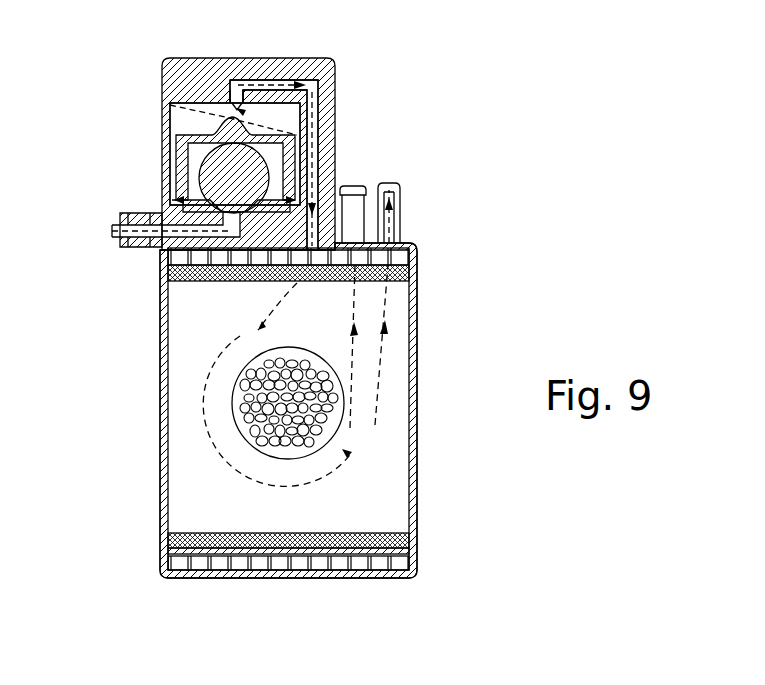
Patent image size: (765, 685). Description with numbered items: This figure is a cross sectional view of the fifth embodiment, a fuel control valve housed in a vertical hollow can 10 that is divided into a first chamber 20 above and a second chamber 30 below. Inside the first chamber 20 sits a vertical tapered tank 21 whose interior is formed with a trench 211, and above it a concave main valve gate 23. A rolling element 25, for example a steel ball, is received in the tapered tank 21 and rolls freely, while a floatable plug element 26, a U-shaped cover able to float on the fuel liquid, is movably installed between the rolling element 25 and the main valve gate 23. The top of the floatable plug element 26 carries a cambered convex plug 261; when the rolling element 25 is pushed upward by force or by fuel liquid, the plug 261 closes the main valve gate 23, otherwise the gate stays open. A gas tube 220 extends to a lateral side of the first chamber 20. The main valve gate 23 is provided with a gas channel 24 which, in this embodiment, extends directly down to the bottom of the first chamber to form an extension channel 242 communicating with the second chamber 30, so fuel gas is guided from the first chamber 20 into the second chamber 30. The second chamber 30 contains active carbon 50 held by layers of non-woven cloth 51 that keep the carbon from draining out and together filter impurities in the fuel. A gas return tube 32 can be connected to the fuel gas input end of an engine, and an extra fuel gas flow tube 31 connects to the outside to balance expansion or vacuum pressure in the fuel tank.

The vertical hollow can 10 is at (160, 378).
The first chamber 20 is at (227, 104).
The tapered tank 21 is at (180, 253).
The main valve gate 23 is at (234, 106).
The gas channel 24 is at (267, 77).
The rolling element 25 is at (205, 168).
The floatable plug element 26 is at (193, 138).
The second chamber 30 is at (397, 487).
The fuel gas flow tube 31 is at (400, 213).
The gas return tube 32 is at (350, 183).
The active carbon 50 is at (340, 425).
The non-woven cloth 51 is at (393, 533).
The trench 211 is at (192, 208).
The gas tube 220 is at (125, 230).
The extension channel 242 is at (320, 167).
The cambered convex plug 261 is at (230, 100).